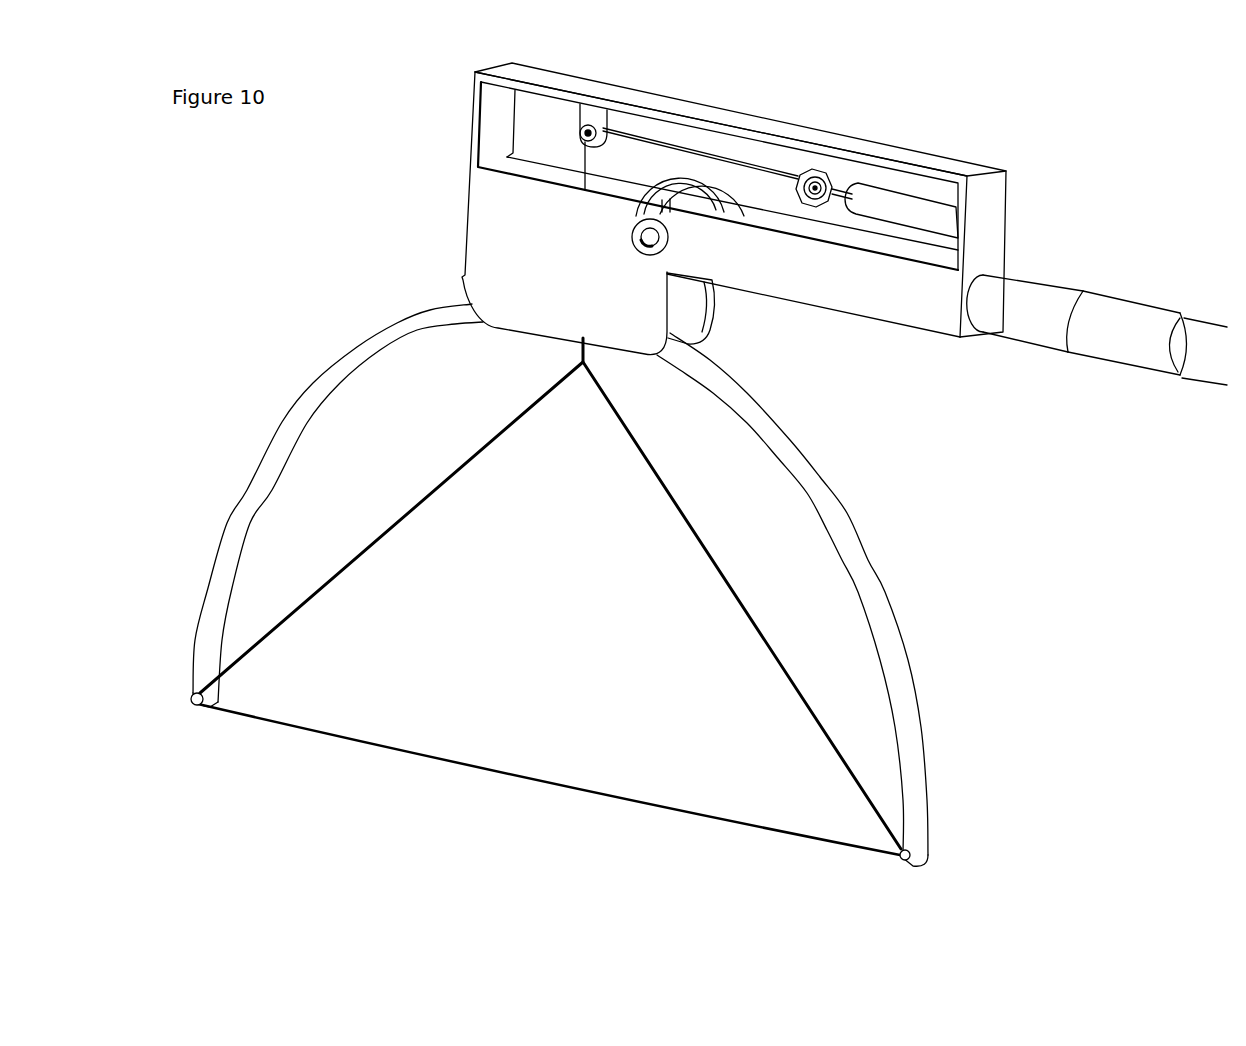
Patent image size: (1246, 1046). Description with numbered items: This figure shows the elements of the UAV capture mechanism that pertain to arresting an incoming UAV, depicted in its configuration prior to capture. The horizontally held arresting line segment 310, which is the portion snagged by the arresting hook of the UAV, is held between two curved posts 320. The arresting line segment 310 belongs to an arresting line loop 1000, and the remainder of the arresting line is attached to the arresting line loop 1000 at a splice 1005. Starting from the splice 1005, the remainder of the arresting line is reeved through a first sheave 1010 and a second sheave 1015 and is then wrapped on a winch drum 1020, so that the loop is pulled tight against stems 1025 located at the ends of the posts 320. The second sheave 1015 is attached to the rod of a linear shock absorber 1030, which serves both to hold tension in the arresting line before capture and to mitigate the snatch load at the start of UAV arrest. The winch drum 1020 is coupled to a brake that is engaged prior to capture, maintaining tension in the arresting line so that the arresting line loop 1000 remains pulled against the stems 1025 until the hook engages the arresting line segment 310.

The arresting line segment 310 is at (505, 791).
The curved posts 320 is at (274, 410).
The arresting line loop 1000 is at (436, 514).
The splice 1005 is at (605, 366).
The sheave 1010 is at (569, 119).
The sheave 1015 is at (851, 158).
The winch drum 1020 is at (724, 294).
The stems 1025 is at (213, 731).
The linear shock absorber 1030 is at (918, 179).